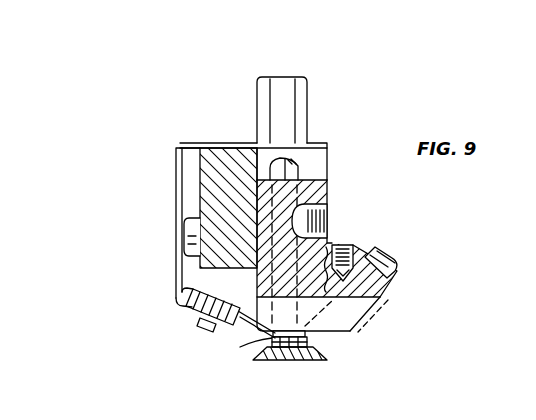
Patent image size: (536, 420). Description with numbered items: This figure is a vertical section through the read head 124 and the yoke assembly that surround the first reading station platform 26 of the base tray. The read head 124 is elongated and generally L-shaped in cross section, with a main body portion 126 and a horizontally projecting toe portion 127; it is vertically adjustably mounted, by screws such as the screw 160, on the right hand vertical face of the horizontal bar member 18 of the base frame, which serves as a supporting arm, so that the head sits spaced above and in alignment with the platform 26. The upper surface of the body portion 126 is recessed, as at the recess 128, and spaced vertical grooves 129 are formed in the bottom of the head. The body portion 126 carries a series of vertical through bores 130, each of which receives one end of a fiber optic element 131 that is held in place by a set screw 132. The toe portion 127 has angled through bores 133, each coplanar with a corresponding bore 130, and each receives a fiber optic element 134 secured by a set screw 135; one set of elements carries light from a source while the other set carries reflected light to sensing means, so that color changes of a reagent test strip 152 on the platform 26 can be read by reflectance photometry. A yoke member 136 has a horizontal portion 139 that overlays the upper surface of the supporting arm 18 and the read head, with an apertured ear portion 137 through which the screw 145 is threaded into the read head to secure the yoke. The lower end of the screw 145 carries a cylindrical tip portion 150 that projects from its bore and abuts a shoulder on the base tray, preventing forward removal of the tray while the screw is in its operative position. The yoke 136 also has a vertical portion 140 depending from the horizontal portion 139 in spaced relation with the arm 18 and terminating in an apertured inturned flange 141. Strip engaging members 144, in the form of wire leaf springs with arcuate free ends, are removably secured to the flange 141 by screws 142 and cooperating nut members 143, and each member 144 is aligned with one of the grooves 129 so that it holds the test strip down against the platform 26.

The screw 145 is at (307, 85).
The apertured ear portion 137 is at (318, 143).
The horizontal portion 139 is at (212, 145).
The vertical portion 140 is at (177, 183).
The yoke member 136 is at (182, 261).
The horizontal bar member 18 is at (205, 198).
The screw 160 is at (186, 236).
The read head 124 is at (327, 152).
The fiber optic element 131 is at (280, 160).
The recess 128 is at (322, 173).
The main body portion 126 is at (327, 191).
The vertical through bore 130 is at (260, 288).
The set screw 132 is at (328, 221).
The set screw 135 is at (353, 246).
The fiber optic element 134 is at (396, 263).
The toe portion 127 is at (392, 283).
The vertical groove 129 is at (382, 297).
The angled through bore 133 is at (373, 319).
The strip engaging member 144 is at (307, 333).
The cylindrical tip portion 150 is at (272, 336).
The reagent test strip 152 is at (272, 346).
The first reading station platform 26 is at (301, 350).
The apertured inturned flange 141 is at (230, 329).
The screw 142 is at (197, 322).
The nut member 143 is at (184, 304).